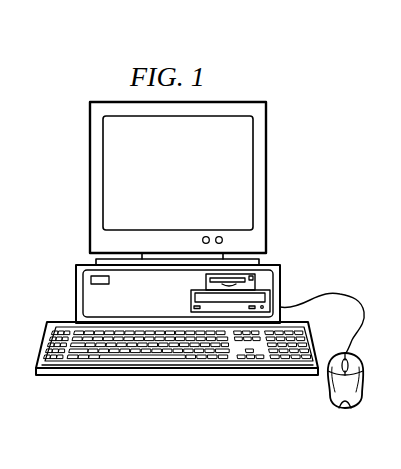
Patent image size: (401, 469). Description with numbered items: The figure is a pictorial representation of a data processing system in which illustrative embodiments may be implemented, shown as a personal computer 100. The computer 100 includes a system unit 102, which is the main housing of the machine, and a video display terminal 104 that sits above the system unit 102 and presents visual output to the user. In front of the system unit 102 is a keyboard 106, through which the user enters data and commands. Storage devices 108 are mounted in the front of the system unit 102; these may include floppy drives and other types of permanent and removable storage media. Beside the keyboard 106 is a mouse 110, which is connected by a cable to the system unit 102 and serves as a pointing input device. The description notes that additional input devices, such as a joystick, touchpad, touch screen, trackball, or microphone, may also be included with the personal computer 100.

The computer 100 is at (88, 61).
The system unit 102 is at (171, 288).
The video display terminal 104 is at (266, 176).
The keyboard 106 is at (119, 376).
The storage devices 108 is at (256, 283).
The mouse 110 is at (347, 408).